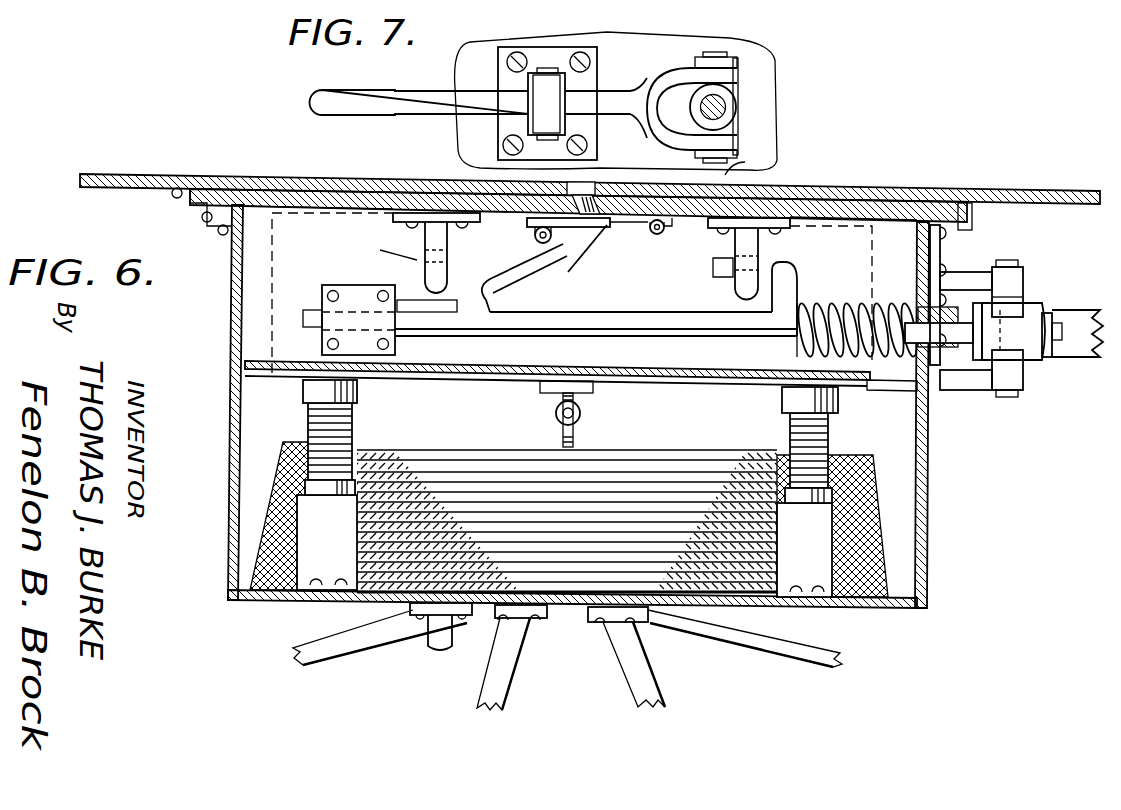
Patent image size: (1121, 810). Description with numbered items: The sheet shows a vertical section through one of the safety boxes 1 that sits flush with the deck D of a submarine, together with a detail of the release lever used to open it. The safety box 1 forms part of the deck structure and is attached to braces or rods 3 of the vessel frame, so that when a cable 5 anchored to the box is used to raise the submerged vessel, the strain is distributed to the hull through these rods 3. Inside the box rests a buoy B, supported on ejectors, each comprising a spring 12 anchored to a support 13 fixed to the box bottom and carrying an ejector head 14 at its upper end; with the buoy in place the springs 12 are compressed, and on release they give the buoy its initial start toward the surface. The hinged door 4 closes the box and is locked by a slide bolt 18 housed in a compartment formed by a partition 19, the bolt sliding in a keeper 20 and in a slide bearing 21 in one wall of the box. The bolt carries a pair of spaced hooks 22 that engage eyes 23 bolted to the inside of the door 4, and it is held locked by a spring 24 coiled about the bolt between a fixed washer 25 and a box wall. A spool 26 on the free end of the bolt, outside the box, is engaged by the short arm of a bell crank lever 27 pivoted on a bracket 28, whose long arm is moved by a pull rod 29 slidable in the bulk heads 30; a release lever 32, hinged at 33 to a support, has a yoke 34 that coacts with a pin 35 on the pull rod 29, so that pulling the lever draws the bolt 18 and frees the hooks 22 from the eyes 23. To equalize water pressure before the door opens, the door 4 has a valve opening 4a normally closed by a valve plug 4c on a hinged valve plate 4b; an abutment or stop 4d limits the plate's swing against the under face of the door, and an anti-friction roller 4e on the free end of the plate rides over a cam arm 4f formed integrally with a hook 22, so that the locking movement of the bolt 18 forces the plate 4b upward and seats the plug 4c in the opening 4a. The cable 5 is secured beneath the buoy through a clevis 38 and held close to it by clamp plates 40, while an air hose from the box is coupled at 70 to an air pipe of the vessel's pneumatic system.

In FIG. 6, the safety box 1 is at (931, 506).
In FIG. 6, the braces or rods 3 is at (430, 615).
In FIG. 6, the door 4 is at (293, 182).
In FIG. 6, the valve opening 4a is at (582, 185).
In FIG. 6, the valve plate 4b is at (560, 270).
In FIG. 6, the valve plug 4c is at (497, 182).
In FIG. 6, the abutment or stop 4d is at (673, 182).
In FIG. 6, the anti-friction roller 4e is at (535, 235).
In FIG. 6, the cam arm 4f is at (520, 258).
In FIG. 6, the cable 5 is at (541, 447).
In FIG. 6, the spring 12 is at (310, 422).
In FIG. 6, the support 13 is at (323, 560).
In FIG. 6, the ejector head 14 is at (307, 388).
In FIG. 6, the slide bolt 18 is at (623, 313).
In FIG. 6, the partition 19 is at (678, 383).
In FIG. 6, the keeper 20 is at (313, 303).
In FIG. 6, the slide bearing 21 is at (948, 357).
In FIG. 6, the hooks 22 is at (430, 270).
In FIG. 6, the eyes 23 is at (425, 278).
In FIG. 6, the spring 24 is at (885, 358).
In FIG. 6, the fixed washer 25 is at (793, 340).
In FIG. 6, the spool 26 is at (1028, 325).
In FIG. 6, the bell crank lever 27 is at (1082, 350).
In FIG. 6, the bracket 28 is at (982, 277).
In FIG. 7, the pull rod 29 is at (726, 108).
In FIG. 7, the bulk heads 30 is at (497, 26).
In FIG. 7, the release lever 32 is at (352, 83).
In FIG. 7, the hinge 33 is at (545, 100).
In FIG. 7, the yoke 34 is at (740, 70).
In FIG. 7, the pin 35 is at (745, 162).
In FIG. 6, the clevis 38 is at (586, 414).
In FIG. 6, the clamp plates 40 is at (553, 401).
In FIG. 6, the air hose coupling 70 is at (440, 633).
In FIG. 6, the buoy B is at (267, 373).
In FIG. 6, the deck D is at (1035, 196).